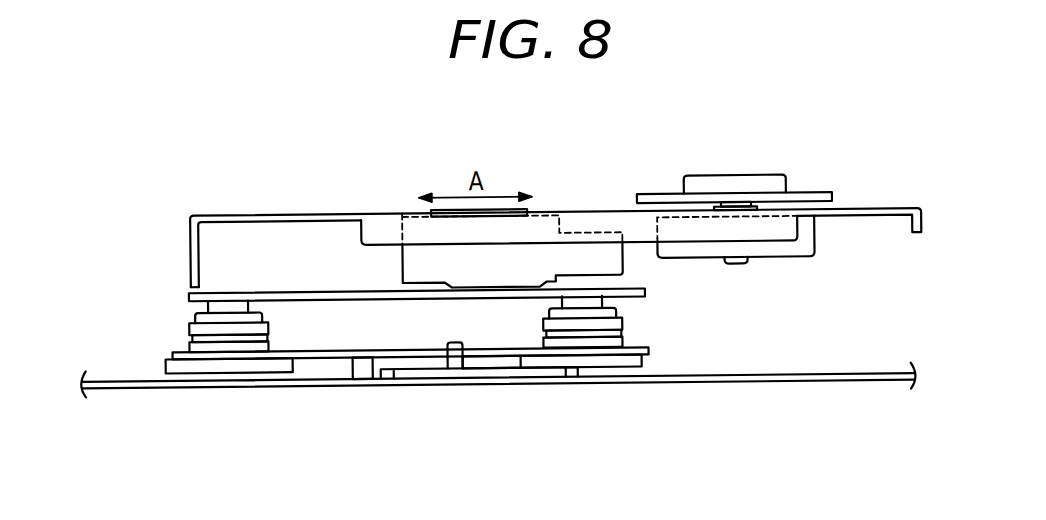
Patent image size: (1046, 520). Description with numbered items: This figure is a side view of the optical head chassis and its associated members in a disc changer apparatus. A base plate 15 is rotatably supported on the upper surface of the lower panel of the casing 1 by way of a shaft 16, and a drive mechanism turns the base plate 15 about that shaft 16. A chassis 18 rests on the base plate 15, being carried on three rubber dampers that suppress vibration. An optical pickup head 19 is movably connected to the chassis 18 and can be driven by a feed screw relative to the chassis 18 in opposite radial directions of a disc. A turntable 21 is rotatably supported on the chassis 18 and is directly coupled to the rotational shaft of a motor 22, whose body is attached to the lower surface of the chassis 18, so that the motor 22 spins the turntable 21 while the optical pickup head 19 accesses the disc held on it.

The casing 1 is at (805, 385).
The base plate 15 is at (303, 355).
The shaft 16 is at (453, 368).
The chassis 18 is at (310, 213).
The optical pickup head 19 is at (513, 262).
The turntable 21 is at (775, 186).
The motor 22 is at (807, 250).